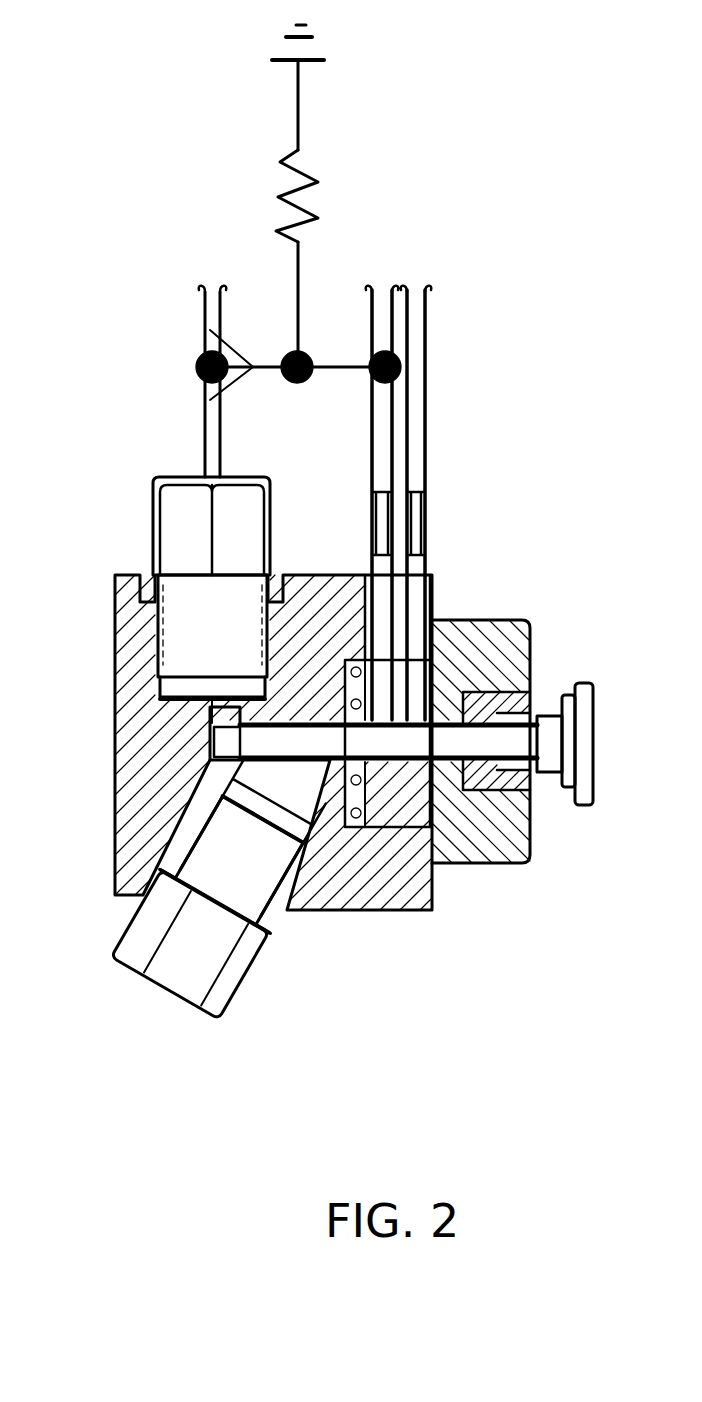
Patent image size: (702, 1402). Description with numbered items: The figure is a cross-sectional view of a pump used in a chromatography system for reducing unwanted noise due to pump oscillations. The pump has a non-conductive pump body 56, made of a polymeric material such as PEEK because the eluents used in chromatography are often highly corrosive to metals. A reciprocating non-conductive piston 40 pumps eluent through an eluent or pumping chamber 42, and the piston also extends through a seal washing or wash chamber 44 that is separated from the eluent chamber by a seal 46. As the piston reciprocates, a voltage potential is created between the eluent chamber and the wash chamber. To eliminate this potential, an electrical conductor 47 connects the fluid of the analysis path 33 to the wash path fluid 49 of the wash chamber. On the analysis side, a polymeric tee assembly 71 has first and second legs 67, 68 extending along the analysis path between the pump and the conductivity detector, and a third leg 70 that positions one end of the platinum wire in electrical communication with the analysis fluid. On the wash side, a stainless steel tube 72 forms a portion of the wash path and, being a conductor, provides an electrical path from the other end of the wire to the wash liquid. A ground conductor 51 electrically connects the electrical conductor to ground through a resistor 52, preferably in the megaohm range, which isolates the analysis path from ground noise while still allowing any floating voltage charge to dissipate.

The analysis path 33 is at (205, 452).
The reciprocating non-conductive piston 40 is at (427, 745).
The eluent or pumping chamber 42 is at (210, 745).
The seal washing or wash chamber 44 is at (385, 760).
The seal 46 is at (303, 847).
The electrical conductor 47 is at (345, 375).
The wash path fluid 49 is at (395, 430).
The ground conductor 51 is at (302, 137).
The resistor 52 is at (280, 195).
The non-conductive pump body 56 is at (115, 657).
The first leg 67 is at (208, 397).
The second leg 68 is at (210, 342).
The third leg 70 is at (245, 372).
The polymeric tee assembly 71 is at (235, 368).
The stainless steel tube 72 is at (382, 478).